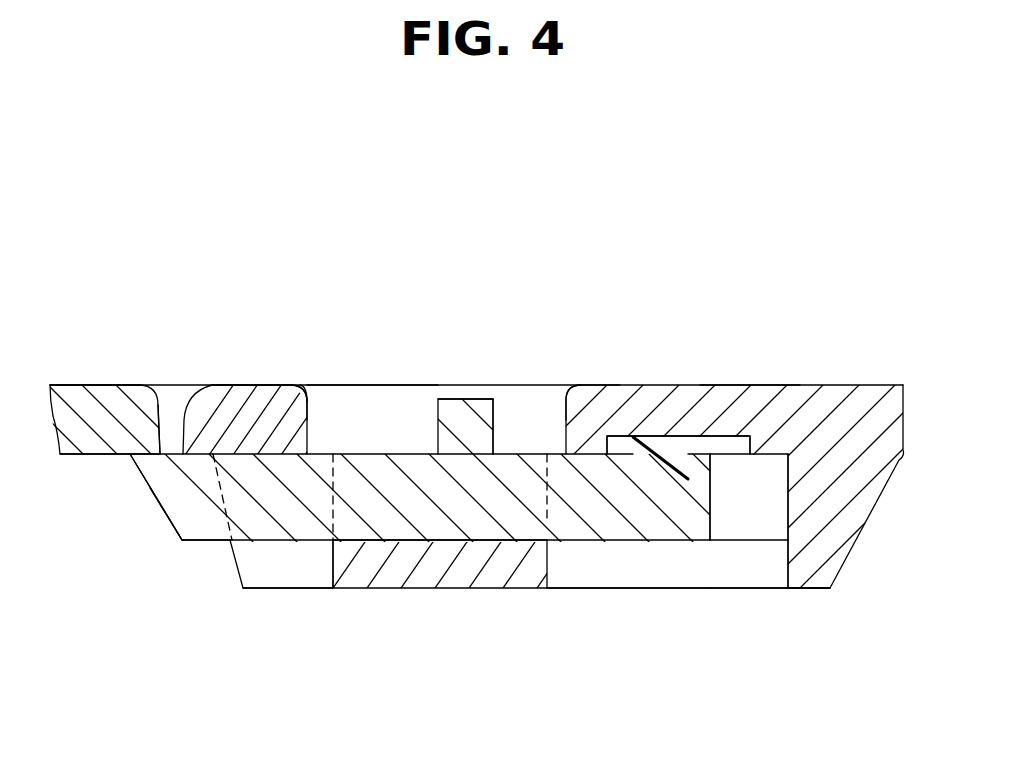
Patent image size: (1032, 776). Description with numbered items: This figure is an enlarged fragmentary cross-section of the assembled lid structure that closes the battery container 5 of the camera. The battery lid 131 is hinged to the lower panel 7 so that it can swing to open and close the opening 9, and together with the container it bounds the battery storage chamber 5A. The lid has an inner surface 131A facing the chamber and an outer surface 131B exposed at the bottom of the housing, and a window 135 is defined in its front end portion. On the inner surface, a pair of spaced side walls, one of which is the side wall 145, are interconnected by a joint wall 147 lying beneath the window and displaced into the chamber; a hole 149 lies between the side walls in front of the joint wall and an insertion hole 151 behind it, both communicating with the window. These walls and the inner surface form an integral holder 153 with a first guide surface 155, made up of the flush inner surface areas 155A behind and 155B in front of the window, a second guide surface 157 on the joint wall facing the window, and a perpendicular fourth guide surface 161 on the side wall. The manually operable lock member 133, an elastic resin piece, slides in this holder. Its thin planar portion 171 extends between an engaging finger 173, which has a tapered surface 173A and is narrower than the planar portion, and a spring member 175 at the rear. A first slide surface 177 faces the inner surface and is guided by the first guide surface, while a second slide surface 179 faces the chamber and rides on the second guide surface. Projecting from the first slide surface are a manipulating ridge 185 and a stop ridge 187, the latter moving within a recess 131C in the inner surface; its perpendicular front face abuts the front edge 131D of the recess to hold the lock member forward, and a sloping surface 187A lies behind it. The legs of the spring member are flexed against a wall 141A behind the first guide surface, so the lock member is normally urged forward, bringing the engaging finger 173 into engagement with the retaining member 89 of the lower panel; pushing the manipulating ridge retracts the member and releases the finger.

The battery container 5 is at (91, 455).
The battery storage chamber 5A is at (530, 740).
The lower panel 7 is at (115, 396).
The opening 9 is at (167, 406).
The retaining member 89 is at (145, 456).
The battery lid 131 is at (831, 387).
The inner surface 131A is at (757, 462).
The outer surface 131B is at (283, 452).
The recess 131C is at (742, 400).
The front edge 131D is at (600, 400).
The manually operable lock member 133 is at (402, 454).
The window 135 is at (308, 400).
The wall 141A is at (786, 512).
The side wall 145 is at (547, 520).
The joint wall 147 is at (468, 577).
The hole 149 is at (302, 584).
The insertion hole 151 is at (670, 581).
The holder 153 is at (402, 588).
The first guide surface 155 is at (231, 452).
The inner surface area 155A is at (566, 400).
The inner surface area 155B is at (280, 392).
The second guide surface 157 is at (516, 541).
The fourth guide surface 161 is at (437, 523).
The planar portion 171 is at (516, 452).
The engaging finger 173 is at (163, 512).
The tapered surface 173A is at (177, 541).
The spring member 175 is at (752, 555).
The first slide surface 177 is at (362, 453).
The second slide surface 179 is at (360, 550).
The manipulating ridge 185 is at (474, 400).
The stop ridge 187 is at (624, 434).
The sloping surface 187A is at (727, 435).